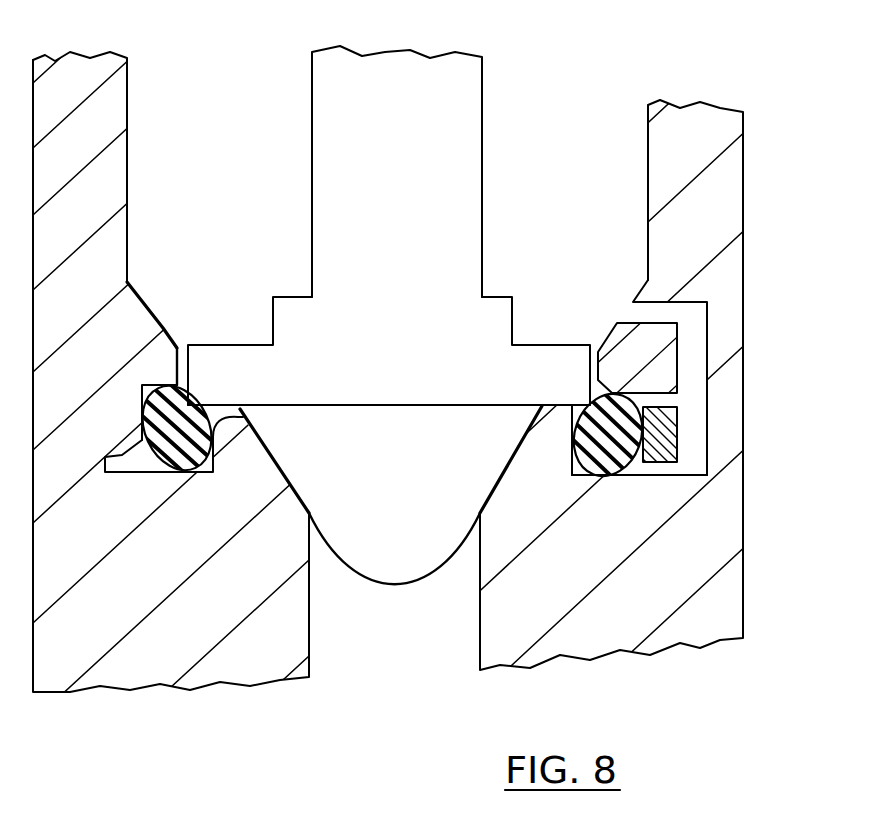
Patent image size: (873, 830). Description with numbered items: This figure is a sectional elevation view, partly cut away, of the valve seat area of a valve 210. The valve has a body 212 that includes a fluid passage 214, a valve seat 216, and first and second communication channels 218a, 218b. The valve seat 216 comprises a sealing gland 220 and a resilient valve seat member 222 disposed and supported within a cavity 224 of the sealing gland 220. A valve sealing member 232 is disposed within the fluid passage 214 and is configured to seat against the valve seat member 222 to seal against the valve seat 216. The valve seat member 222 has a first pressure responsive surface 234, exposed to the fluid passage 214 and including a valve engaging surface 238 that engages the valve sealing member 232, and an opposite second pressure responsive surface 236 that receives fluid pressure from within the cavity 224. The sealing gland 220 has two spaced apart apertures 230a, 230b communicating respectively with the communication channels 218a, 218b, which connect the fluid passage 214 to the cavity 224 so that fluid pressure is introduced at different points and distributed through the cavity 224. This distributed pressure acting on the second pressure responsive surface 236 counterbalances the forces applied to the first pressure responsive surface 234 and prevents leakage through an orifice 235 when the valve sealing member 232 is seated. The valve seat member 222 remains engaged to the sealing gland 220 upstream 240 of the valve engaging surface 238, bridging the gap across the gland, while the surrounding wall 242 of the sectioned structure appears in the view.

The valve 210 is at (763, 232).
The body 212 is at (715, 148).
The fluid passage 214 is at (578, 161).
The valve seat 216 is at (643, 490).
The first communication channel 218a is at (663, 472).
The second communication channel 218b is at (662, 400).
The sealing gland 220 is at (625, 477).
The valve seat member 222 is at (187, 452).
The cavity 224 is at (135, 460).
The first aperture 230a is at (680, 472).
The second aperture 230b is at (686, 405).
The valve sealing member 232 is at (400, 382).
The first pressure responsive surface 234 is at (212, 403).
The orifice 235 is at (320, 537).
The second pressure responsive surface 236 is at (152, 387).
The valve engaging surface 238 is at (192, 398).
The upstream 240 is at (408, 666).
The housing wall 242 is at (213, 157).